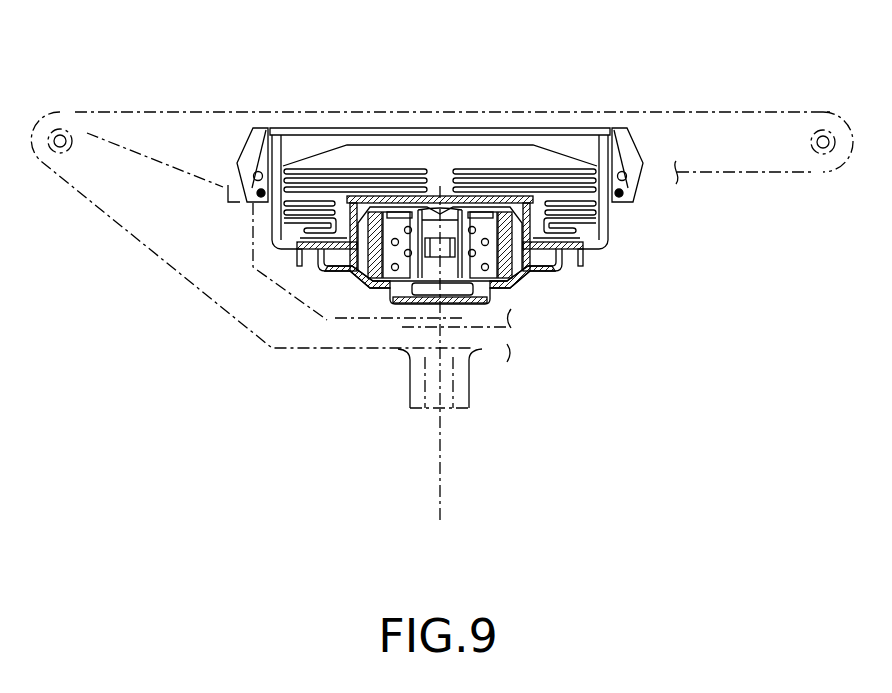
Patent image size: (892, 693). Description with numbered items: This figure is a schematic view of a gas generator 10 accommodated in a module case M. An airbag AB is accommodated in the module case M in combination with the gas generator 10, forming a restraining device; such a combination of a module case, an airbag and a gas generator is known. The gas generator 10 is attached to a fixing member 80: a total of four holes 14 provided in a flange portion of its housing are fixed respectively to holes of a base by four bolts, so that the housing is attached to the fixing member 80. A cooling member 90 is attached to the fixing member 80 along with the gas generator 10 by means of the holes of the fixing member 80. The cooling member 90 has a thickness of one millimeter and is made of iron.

The gas generator 10 is at (345, 270).
The holes 14 is at (561, 250).
The fixing member 80 is at (297, 260).
The cooling member 90 is at (349, 198).
The module case M is at (561, 128).
The airbag AB is at (600, 222).